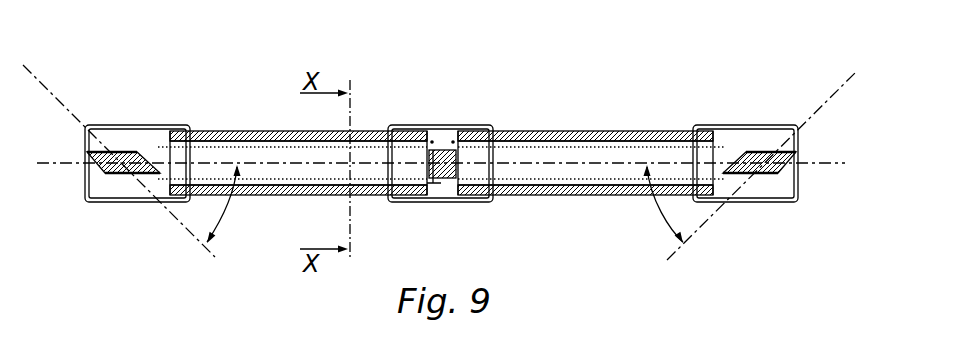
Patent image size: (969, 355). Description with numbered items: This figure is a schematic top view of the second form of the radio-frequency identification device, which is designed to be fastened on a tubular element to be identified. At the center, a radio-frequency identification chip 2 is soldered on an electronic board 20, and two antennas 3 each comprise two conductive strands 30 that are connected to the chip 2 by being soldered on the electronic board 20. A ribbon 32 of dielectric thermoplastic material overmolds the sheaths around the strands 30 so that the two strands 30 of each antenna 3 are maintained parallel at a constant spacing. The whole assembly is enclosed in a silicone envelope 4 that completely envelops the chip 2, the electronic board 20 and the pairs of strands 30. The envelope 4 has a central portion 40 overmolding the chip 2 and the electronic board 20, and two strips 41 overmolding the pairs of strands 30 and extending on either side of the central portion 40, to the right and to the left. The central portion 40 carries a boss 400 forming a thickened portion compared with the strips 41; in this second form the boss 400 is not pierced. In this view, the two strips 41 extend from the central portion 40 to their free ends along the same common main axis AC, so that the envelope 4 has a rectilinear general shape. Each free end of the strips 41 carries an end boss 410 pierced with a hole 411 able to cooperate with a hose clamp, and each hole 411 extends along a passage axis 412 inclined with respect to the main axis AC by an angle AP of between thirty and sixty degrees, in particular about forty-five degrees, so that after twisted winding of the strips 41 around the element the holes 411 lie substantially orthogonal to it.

The radio-frequency identification chip 2 is at (443, 162).
The electronic board 20 is at (438, 168).
The antenna 3 is at (264, 128).
The conductive strand 30 is at (453, 142).
The ribbon 32 is at (219, 155).
The envelope 4 is at (579, 125).
The central portion 40 is at (409, 121).
The boss 400 is at (471, 128).
The strip 41 is at (309, 202).
The end boss 410 is at (138, 148).
The hole 411 is at (121, 154).
The passage axis 412 is at (207, 254).
The angle AP is at (445, 204).
The common main axis AC is at (833, 165).